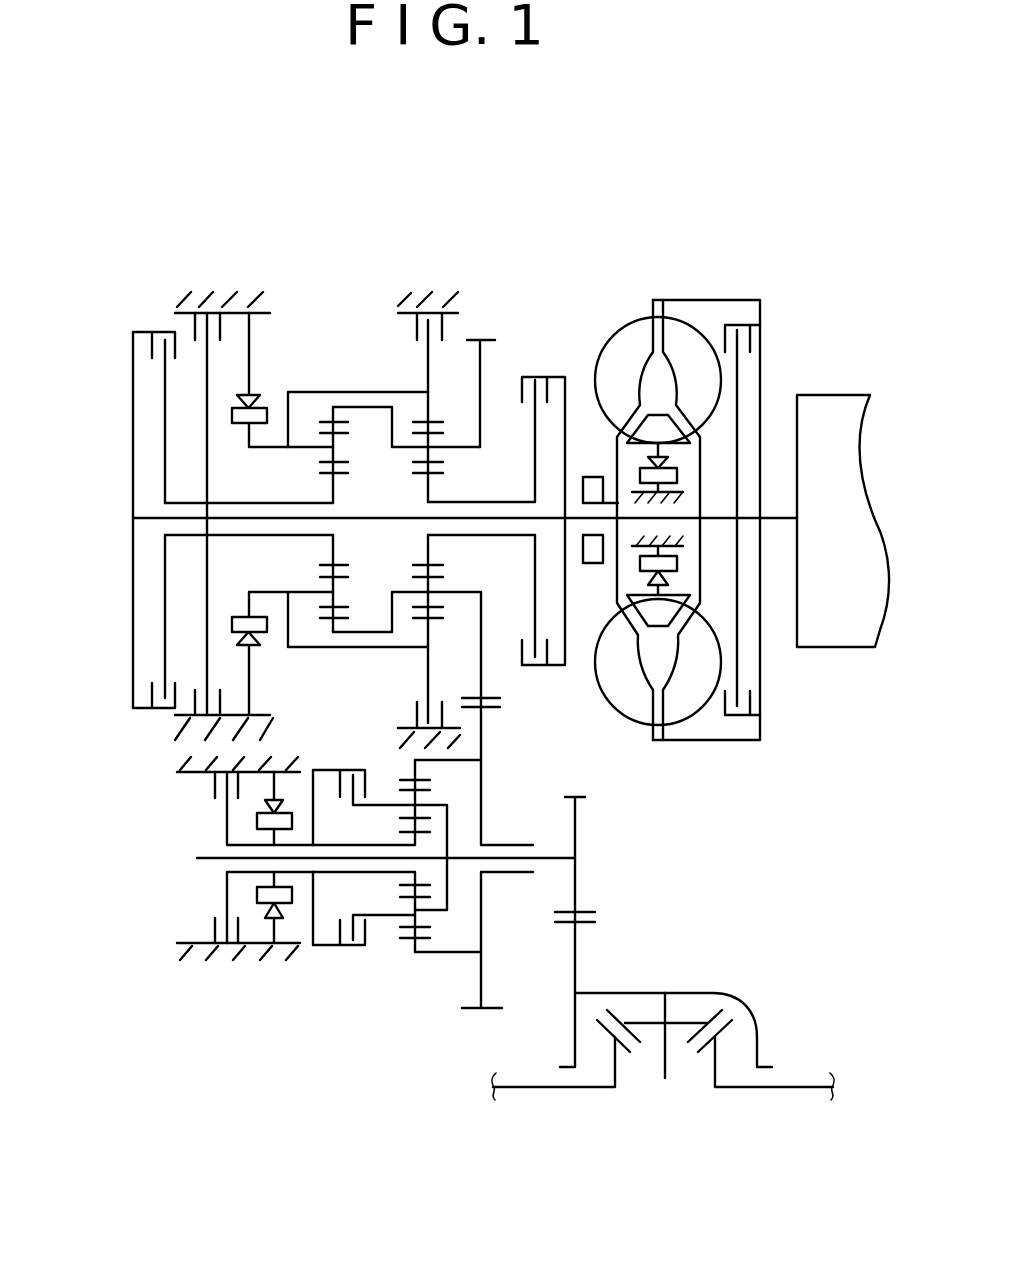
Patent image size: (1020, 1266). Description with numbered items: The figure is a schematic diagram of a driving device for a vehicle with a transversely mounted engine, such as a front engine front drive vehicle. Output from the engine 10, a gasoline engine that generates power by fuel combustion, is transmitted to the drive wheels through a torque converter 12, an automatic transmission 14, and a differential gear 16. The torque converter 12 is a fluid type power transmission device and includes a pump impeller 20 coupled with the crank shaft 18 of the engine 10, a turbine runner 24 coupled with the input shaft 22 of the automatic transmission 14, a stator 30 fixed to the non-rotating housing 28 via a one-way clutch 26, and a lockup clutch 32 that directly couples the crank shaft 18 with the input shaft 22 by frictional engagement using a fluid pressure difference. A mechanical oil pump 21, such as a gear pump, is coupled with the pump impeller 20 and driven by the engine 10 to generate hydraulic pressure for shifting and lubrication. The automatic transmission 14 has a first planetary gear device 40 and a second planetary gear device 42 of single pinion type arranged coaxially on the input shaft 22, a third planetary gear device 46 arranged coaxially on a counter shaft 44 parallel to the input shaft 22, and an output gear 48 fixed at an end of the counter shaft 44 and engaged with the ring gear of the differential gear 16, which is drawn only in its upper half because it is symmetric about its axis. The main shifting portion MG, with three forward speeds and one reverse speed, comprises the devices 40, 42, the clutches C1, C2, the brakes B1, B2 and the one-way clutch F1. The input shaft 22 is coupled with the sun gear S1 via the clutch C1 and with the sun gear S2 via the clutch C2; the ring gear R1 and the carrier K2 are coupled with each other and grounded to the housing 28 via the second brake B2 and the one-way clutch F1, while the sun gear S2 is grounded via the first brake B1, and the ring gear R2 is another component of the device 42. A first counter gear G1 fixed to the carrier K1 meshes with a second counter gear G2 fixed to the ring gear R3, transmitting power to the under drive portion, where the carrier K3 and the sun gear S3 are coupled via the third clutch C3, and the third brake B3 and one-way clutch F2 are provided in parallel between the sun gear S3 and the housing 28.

The engine 10 is at (812, 443).
The torque converter 12 is at (665, 474).
The automatic transmission 14 is at (309, 487).
The differential gear 16 is at (657, 948).
The crank shaft 18 is at (772, 520).
The pump impeller 20 is at (647, 333).
The mechanical oil pump 21 is at (593, 487).
The input shaft 22 is at (507, 520).
The turbine runner 24 is at (688, 698).
The one-way clutch 26 is at (643, 616).
The housing 28 is at (265, 313).
The stator 30 is at (657, 437).
The lockup clutch 32 is at (737, 325).
The first planetary gear device 40 is at (479, 486).
The second planetary gear device 42 is at (348, 428).
The counter shaft 44 is at (310, 892).
The third planetary gear device 46 is at (421, 892).
The output gear 48 is at (588, 908).
The first brake B1 is at (224, 495).
The second brake B2 is at (429, 502).
The third brake B3 is at (245, 877).
The first clutch C1 is at (538, 377).
The second clutch C2 is at (229, 502).
The third clutch C3 is at (364, 879).
The one-way clutch F1 is at (282, 514).
The one-way clutch F2 is at (282, 884).
The carrier K1 is at (452, 448).
The carrier K2 is at (320, 590).
The carrier K3 is at (433, 805).
The ring gear R1 is at (433, 418).
The ring gear R2 is at (353, 413).
The ring gear R3 is at (410, 777).
The sun gear S1 is at (432, 475).
The sun gear S2 is at (320, 476).
The sun gear S3 is at (410, 833).
The first counter gear G1 is at (497, 688).
The second counter gear G2 is at (493, 1008).
The main shifting portion MG is at (193, 518).